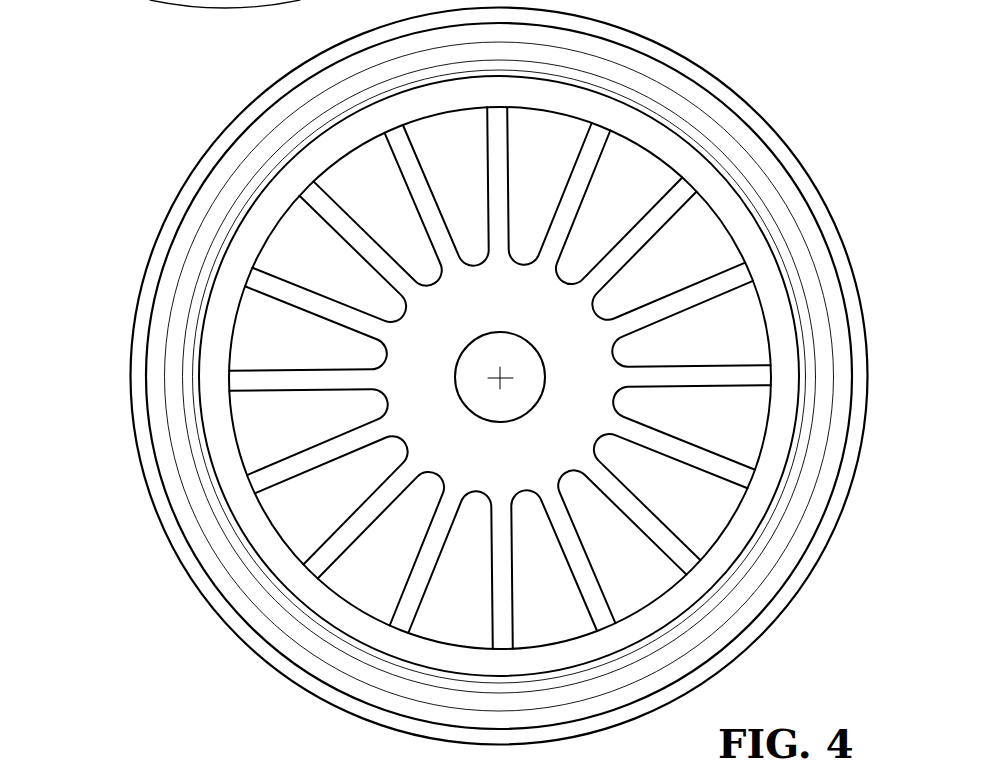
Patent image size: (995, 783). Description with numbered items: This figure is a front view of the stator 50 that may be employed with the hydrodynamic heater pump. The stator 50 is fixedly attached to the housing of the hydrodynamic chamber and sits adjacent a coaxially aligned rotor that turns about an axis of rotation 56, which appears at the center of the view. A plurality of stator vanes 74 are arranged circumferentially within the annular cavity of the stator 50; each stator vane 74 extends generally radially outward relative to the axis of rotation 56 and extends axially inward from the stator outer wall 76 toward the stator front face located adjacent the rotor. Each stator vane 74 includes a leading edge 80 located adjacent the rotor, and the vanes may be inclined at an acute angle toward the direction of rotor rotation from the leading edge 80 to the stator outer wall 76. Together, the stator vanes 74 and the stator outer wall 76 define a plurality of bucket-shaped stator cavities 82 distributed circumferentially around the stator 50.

The stator 50 is at (706, 68).
The axis of rotation 56 is at (497, 382).
The stator vane 74 is at (704, 278).
The stator outer wall 76 is at (233, 232).
The leading edge 80 is at (270, 379).
The bucket-shaped stator cavity 82 is at (363, 185).